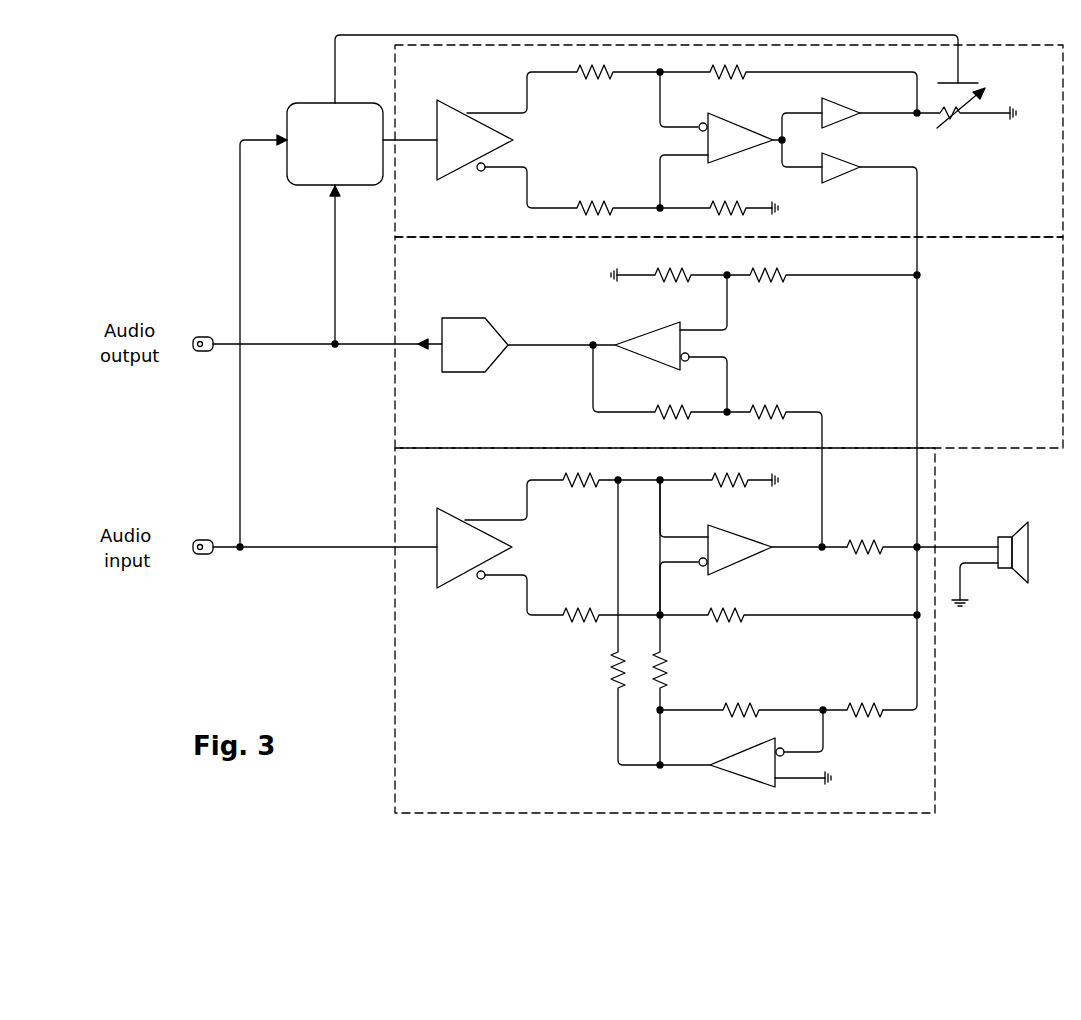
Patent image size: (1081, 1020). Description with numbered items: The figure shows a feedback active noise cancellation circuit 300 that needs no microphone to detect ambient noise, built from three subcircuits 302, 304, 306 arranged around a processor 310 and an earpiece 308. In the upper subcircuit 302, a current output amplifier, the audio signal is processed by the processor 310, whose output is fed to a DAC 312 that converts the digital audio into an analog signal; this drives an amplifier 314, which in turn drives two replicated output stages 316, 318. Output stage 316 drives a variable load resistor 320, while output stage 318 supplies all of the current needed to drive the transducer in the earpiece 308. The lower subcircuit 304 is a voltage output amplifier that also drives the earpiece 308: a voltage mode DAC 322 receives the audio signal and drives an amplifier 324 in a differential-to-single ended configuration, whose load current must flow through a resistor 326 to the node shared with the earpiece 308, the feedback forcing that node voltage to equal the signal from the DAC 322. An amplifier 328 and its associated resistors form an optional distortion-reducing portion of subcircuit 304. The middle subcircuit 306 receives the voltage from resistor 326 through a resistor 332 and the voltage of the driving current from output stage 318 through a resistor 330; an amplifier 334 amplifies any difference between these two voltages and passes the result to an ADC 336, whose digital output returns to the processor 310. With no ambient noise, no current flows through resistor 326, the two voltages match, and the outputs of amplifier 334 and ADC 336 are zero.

The feedback active noise cancellation circuit 300 is at (1055, 784).
The subcircuit 302 is at (1003, 202).
The subcircuit 304 is at (509, 740).
The subcircuit 306 is at (1011, 356).
The earpiece 308 is at (1015, 594).
The processor 310 is at (335, 144).
The DAC 312 is at (475, 140).
The amplifier 314 is at (736, 138).
The output stage 316 is at (810, 101).
The output stage 318 is at (858, 188).
The variable load resistor 320 is at (982, 127).
The DAC 322 is at (474, 548).
The amplifier 324 is at (735, 550).
The resistor 326 is at (855, 528).
The amplifier 328 is at (747, 762).
The resistor 330 is at (777, 297).
The resistor 332 is at (793, 397).
The amplifier 334 is at (652, 346).
The ADC 336 is at (475, 345).